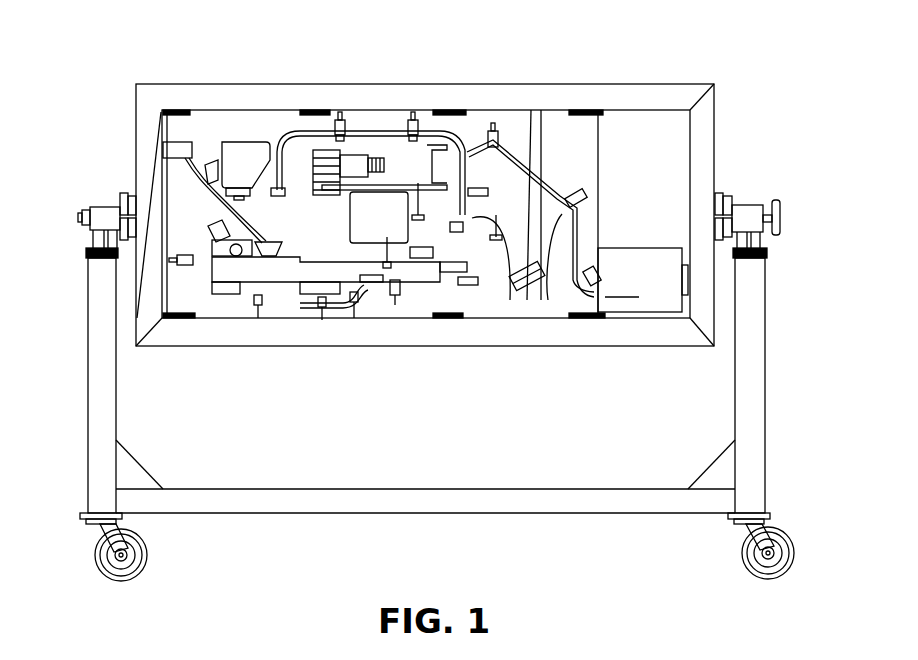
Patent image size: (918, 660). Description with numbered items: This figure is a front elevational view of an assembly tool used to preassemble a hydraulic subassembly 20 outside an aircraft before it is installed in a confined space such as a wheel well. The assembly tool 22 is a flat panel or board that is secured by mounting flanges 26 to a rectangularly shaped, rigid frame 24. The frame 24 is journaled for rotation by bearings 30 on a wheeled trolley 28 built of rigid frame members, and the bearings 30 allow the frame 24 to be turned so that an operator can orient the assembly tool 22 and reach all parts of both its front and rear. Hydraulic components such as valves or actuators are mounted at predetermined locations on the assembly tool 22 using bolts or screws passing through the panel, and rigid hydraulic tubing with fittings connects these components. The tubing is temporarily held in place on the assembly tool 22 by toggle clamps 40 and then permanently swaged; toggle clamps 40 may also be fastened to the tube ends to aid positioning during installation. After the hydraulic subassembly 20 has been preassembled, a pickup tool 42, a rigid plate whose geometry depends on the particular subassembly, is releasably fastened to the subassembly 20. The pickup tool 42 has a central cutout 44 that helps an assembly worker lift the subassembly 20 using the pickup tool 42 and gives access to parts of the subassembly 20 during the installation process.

The hydraulic subassembly 20 is at (257, 122).
The assembly tool 22 is at (587, 134).
The frame 24 is at (492, 96).
The mounting flanges 26 is at (182, 110).
The wheeled trolley 28 is at (103, 397).
The bearings 30 is at (99, 207).
The toggle clamps 40 is at (255, 310).
The pickup tool 42 is at (343, 127).
The central cutout 44 is at (364, 248).